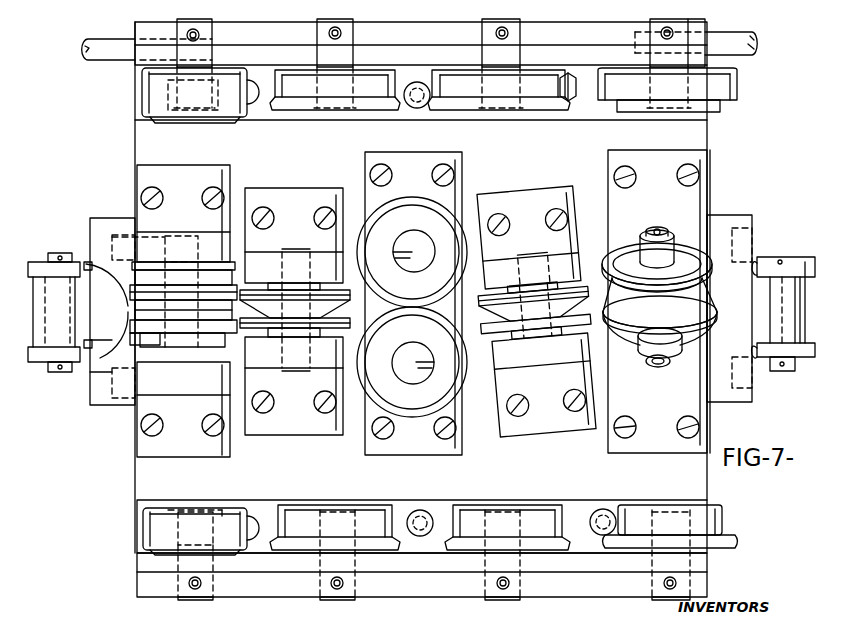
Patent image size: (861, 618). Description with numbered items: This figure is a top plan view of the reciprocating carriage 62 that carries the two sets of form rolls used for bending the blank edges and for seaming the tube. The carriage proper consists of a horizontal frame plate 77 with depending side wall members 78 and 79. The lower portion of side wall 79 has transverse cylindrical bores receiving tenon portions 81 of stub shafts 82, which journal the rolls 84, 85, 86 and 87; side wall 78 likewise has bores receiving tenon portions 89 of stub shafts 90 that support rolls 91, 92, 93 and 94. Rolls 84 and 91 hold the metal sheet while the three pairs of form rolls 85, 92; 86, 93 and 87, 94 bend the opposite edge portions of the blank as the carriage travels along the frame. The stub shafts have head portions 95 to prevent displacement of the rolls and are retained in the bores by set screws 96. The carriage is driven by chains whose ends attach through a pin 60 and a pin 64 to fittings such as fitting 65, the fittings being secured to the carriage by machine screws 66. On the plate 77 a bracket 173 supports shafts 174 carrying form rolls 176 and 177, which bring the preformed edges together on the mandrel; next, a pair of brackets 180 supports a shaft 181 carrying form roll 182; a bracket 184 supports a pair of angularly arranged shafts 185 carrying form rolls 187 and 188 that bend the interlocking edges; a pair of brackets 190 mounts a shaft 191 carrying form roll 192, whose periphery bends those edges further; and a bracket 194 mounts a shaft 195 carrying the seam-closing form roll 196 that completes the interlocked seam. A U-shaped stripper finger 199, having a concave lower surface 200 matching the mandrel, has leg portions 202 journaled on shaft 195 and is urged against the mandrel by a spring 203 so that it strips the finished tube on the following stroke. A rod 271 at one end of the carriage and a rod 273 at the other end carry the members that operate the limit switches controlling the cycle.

The pin 60 is at (64, 372).
The carriage 62 is at (128, 489).
The pin 64 is at (774, 371).
The fitting 65 is at (762, 266).
The machine screws 66 is at (119, 230).
The horizontal frame plate 77 is at (140, 137).
The side wall member 78 is at (614, 28).
The side wall member 79 is at (446, 590).
The tenon portions 81 is at (520, 583).
The stub shafts 82 is at (240, 528).
The roll 84 is at (146, 528).
The form roll 85 is at (275, 538).
The form roll 86 is at (452, 510).
The form roll 87 is at (640, 496).
The tenon portions 89 is at (205, 20).
The stub shafts 90 is at (178, 96).
The roll 91 is at (248, 110).
The form roll 92 is at (397, 104).
The form roll 93 is at (432, 104).
The form roll 94 is at (602, 108).
The head portions 95 is at (205, 118).
The set screws 96 is at (328, 34).
The bracket 173 is at (703, 157).
The shafts 174 is at (652, 230).
The form roll 176 is at (700, 284).
The form roll 177 is at (704, 326).
The brackets 180 is at (560, 192).
The shaft 181 is at (546, 248).
The form roll 182 is at (535, 322).
The bracket 184 is at (456, 165).
The shafts 185 is at (412, 240).
The form roll 187 is at (432, 216).
The form roll 188 is at (398, 398).
The brackets 190 is at (298, 190).
The shaft 191 is at (316, 243).
The form roll 192 is at (345, 312).
The bracket 194 is at (147, 178).
The shaft 195 is at (198, 242).
The form roll 196 is at (142, 318).
The finger 199 is at (108, 366).
The lower surface 200 is at (88, 266).
The leg portions 202 is at (150, 276).
The spring 203 is at (140, 332).
The rod 271 is at (742, 57).
The rod 273 is at (103, 62).